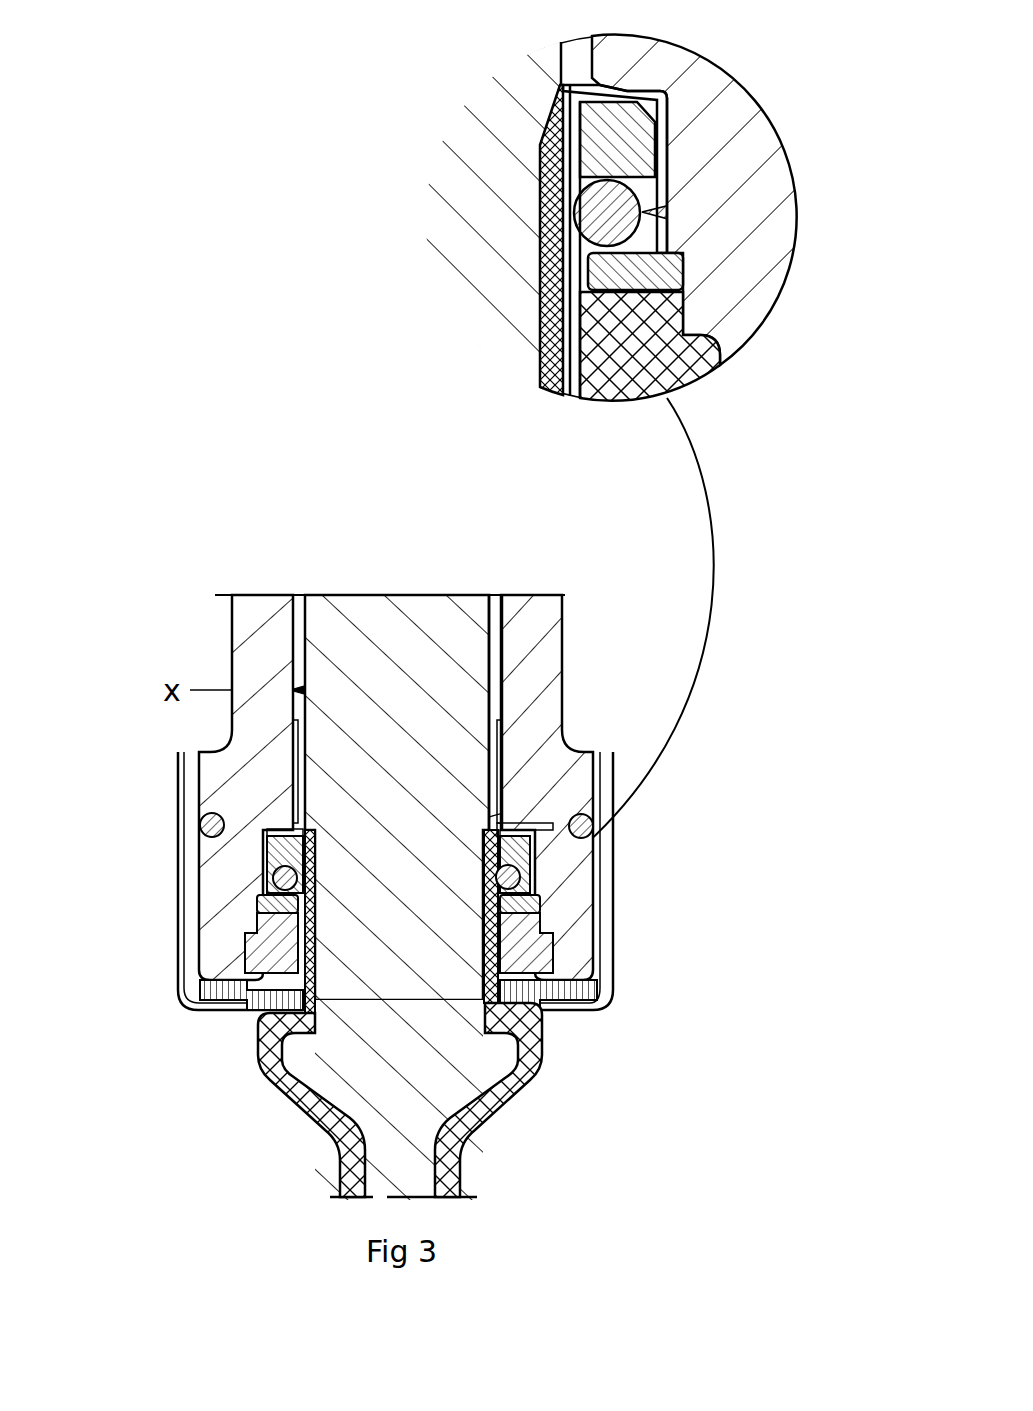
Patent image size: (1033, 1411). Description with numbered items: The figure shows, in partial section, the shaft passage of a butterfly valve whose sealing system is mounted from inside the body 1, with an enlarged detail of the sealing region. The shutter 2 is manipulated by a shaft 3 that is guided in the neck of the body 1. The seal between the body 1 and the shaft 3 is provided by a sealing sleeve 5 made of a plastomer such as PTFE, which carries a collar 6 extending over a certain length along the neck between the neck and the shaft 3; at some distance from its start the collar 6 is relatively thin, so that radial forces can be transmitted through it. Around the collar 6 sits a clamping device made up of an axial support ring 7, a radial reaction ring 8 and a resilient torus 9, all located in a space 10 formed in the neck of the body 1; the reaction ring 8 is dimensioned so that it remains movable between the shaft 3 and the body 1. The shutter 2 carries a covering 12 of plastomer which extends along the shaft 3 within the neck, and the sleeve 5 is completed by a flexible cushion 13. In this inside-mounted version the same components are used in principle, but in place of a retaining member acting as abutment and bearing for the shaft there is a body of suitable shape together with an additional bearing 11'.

The body 1 is at (610, 992).
The shutter 2 is at (383, 1128).
The shaft 3 is at (462, 660).
The sealing sleeve 5 is at (612, 957).
The collar 6 is at (548, 930).
The axial support ring 7 is at (262, 903).
The radial reaction ring 8 is at (262, 838).
The resilient torus 9 is at (275, 882).
The space 10 is at (503, 832).
The additional bearing 11' is at (542, 712).
The covering 12 is at (290, 1095).
The flexible cushion 13 is at (200, 1003).